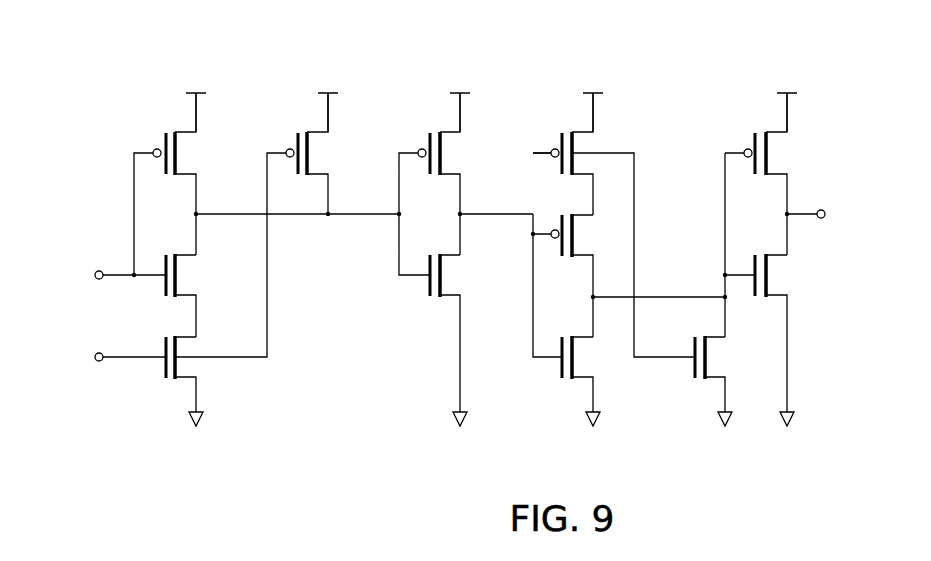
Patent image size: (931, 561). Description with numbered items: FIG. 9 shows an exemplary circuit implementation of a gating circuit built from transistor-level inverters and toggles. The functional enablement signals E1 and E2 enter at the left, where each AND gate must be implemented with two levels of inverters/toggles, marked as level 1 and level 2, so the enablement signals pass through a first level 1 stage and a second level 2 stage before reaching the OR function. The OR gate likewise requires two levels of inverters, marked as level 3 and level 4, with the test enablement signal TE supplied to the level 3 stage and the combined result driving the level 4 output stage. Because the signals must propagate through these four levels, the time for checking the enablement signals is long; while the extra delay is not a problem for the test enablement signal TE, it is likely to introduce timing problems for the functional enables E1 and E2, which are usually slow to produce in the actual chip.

The level 1 is at (130, 446).
The level 2 is at (394, 446).
The level 3 is at (526, 446).
The level 4 is at (720, 446).
The enablement signal E1 is at (85, 275).
The enablement signal E2 is at (85, 357).
The test enablement signal TE is at (526, 154).